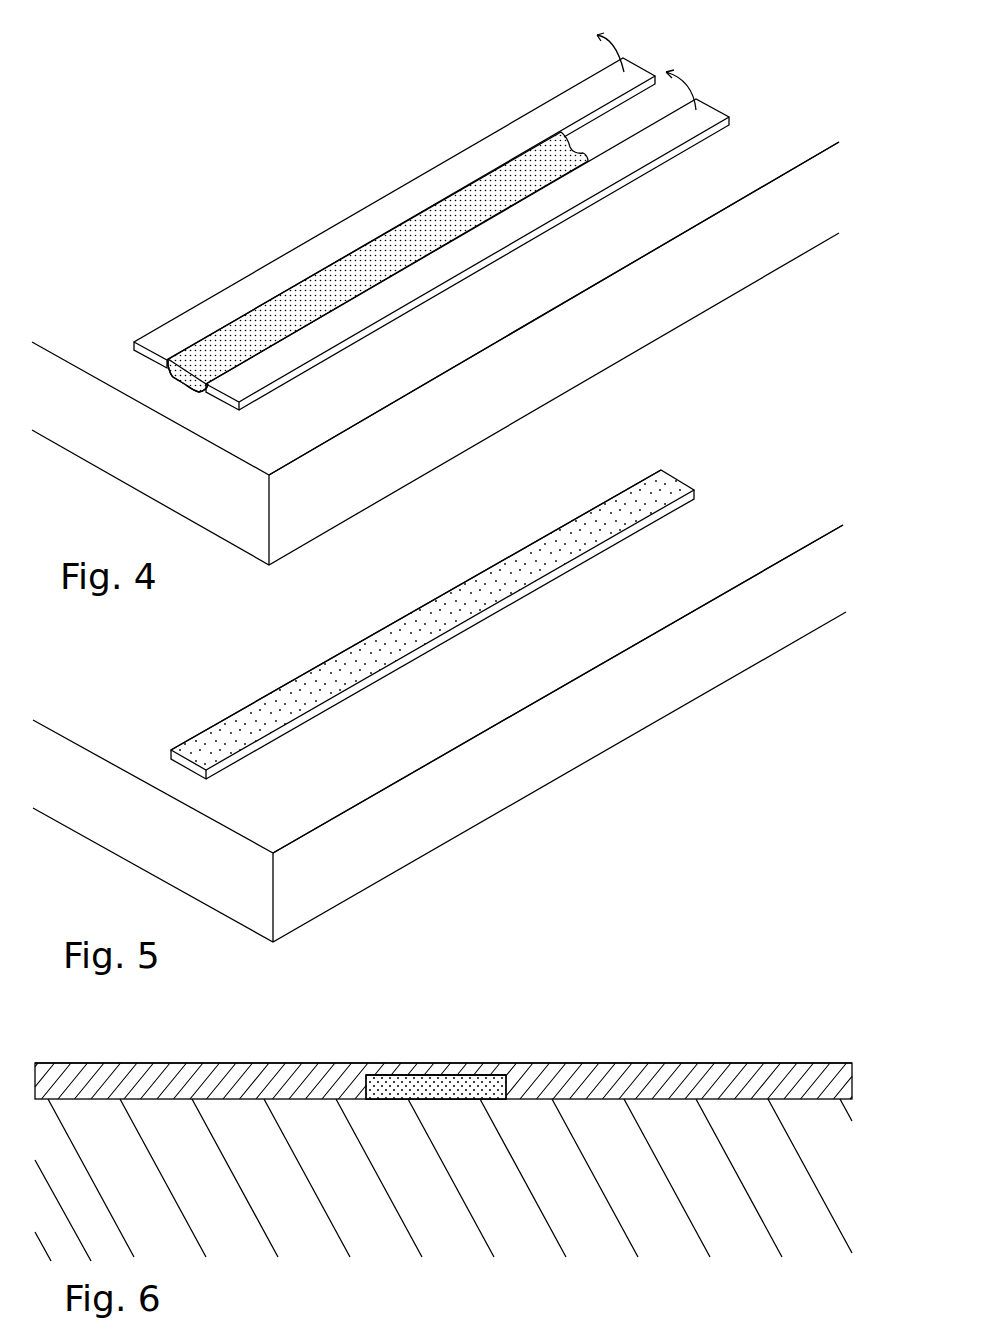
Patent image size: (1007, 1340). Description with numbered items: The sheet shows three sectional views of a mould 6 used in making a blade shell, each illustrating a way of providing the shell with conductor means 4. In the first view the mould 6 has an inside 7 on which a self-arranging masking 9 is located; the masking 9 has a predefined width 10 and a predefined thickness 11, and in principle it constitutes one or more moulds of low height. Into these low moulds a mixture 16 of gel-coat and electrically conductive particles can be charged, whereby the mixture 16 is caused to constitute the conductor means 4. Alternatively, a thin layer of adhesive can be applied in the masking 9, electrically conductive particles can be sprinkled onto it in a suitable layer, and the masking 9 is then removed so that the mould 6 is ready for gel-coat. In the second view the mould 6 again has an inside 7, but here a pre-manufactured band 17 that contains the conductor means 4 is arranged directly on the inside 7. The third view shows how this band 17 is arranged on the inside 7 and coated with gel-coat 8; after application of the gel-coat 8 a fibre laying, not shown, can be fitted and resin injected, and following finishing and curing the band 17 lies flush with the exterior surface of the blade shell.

In FIG. 4, the conductor means 4 is at (296, 288).
In FIG. 5, the conductor means 4 is at (303, 677).
In FIG. 6, the conductor means 4 is at (384, 1080).
In FIG. 4, the mould 6 is at (643, 306).
In FIG. 5, the mould 6 is at (530, 746).
In FIG. 6, the mould 6 is at (373, 1172).
In FIG. 4, the inside 7 is at (652, 222).
In FIG. 5, the inside 7 is at (548, 626).
In FIG. 6, the inside 7 is at (620, 1091).
In FIG. 6, the gel-coat 8 is at (746, 1069).
In FIG. 4, the self-arranging masking 9 is at (441, 165).
In FIG. 4, the width 10 is at (711, 99).
In FIG. 4, the thickness 11 is at (719, 111).
In FIG. 4, the mixture 16 is at (191, 335).
In FIG. 5, the pre-manufactured band 17 is at (221, 714).
In FIG. 6, the pre-manufactured band 17 is at (475, 1069).